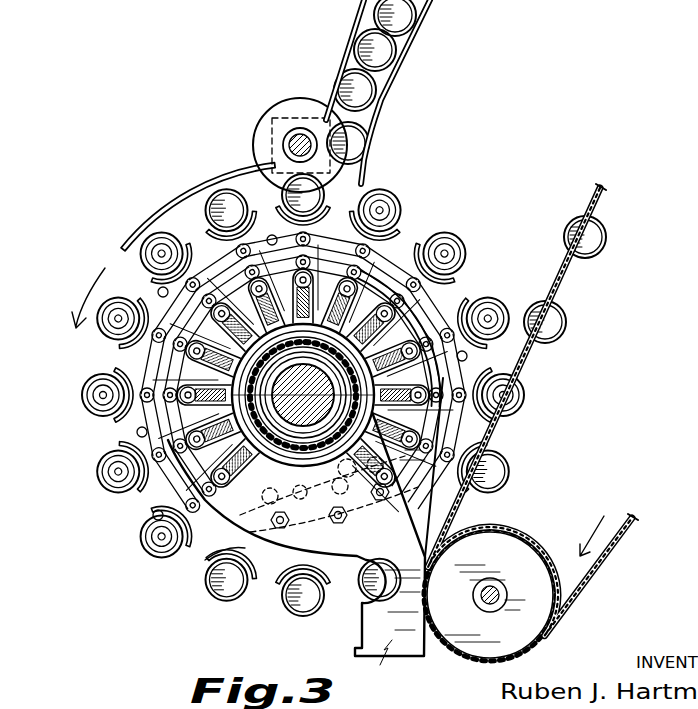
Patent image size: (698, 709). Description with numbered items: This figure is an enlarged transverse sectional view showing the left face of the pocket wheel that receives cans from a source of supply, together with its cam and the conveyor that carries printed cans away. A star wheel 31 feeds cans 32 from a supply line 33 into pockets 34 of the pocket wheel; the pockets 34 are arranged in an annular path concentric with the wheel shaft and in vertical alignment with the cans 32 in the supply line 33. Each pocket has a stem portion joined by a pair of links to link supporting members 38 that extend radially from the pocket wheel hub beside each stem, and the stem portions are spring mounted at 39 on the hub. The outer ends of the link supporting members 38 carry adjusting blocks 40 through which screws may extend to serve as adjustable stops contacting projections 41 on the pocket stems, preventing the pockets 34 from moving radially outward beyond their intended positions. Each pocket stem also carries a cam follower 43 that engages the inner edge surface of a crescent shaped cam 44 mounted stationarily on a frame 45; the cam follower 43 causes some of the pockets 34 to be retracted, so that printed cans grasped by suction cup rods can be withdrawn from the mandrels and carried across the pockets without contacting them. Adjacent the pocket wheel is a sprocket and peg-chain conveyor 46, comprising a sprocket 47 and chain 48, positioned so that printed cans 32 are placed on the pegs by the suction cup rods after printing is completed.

The star wheel 31 is at (285, 123).
The cans 32 is at (366, 40).
The supply line 33 is at (418, 22).
The pockets 34 is at (400, 230).
The link supporting members 38 is at (158, 390).
The spring mounting 39 is at (466, 356).
The adjusting blocks 40 is at (218, 233).
The projections 41 is at (271, 236).
The cam follower 43 is at (438, 306).
The crescent shaped cam 44 is at (228, 540).
The frame 45 is at (400, 541).
The sprocket and peg-chain conveyor 46 is at (540, 525).
The sprocket 47 is at (533, 563).
The chain 48 is at (606, 189).